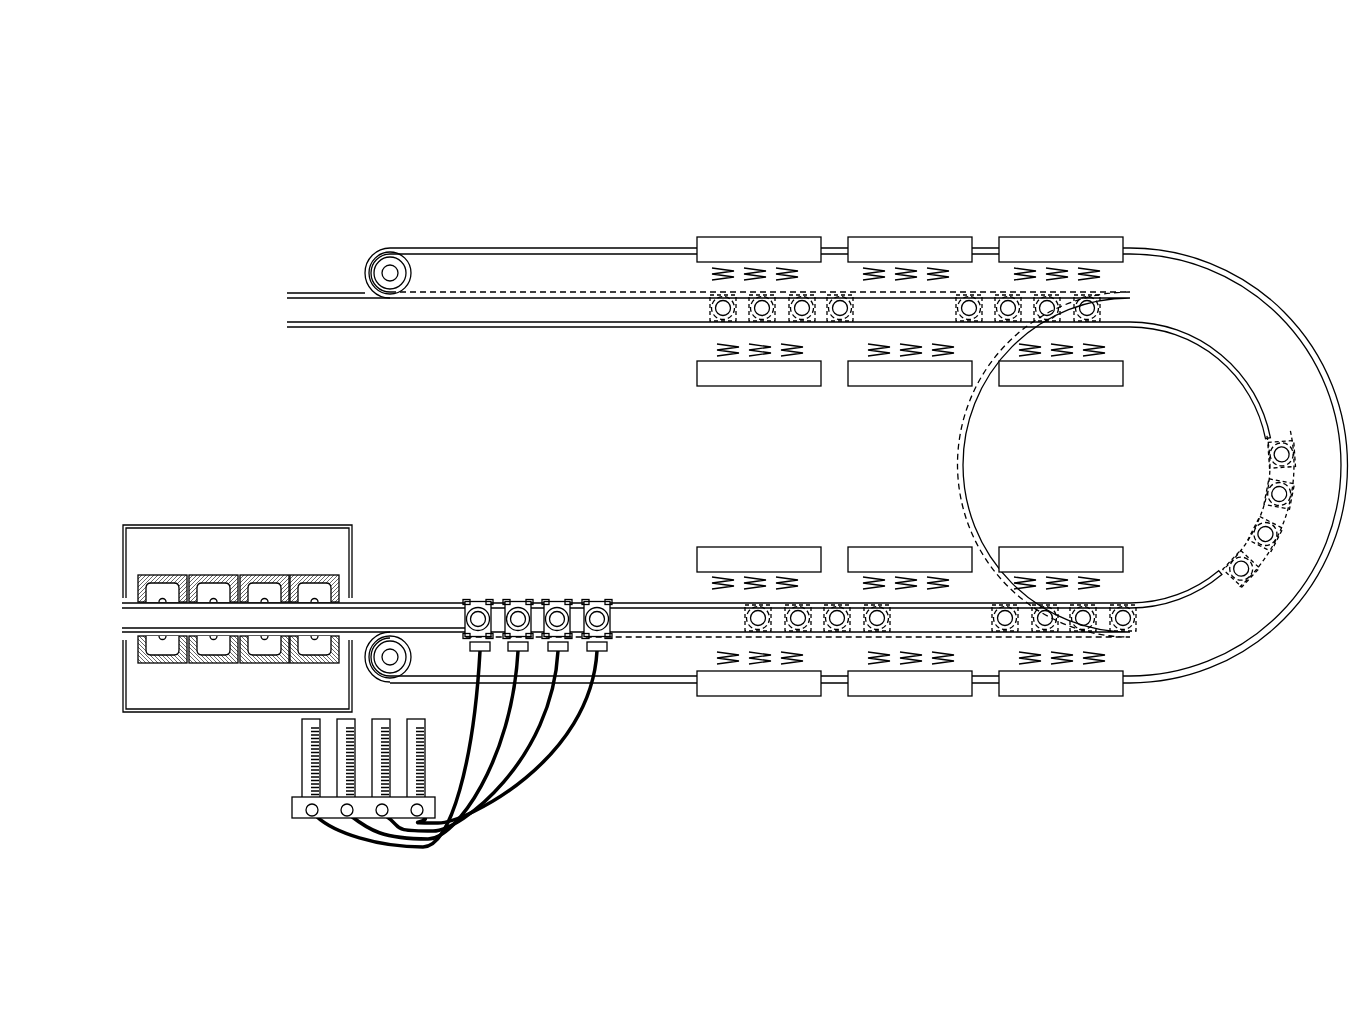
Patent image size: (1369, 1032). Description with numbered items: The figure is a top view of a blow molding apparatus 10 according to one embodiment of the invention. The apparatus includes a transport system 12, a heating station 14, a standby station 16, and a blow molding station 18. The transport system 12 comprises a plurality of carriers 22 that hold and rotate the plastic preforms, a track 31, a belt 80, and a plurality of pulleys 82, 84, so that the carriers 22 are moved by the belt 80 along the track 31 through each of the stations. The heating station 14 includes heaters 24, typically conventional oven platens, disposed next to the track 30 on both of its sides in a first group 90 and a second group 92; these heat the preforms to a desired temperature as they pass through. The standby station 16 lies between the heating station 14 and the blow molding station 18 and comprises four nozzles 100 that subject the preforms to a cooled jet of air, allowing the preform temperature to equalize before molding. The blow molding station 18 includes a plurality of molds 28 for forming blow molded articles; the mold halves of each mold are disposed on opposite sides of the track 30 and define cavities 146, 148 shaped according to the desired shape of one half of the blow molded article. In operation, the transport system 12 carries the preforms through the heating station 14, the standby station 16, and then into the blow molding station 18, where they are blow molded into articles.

The blow molding apparatus 10 is at (525, 198).
The transport system 12 is at (556, 328).
The heating station 14 is at (775, 522).
The standby station 16 is at (537, 556).
The blow molding station 18 is at (248, 495).
The carriers 22 is at (467, 601).
The heaters 24 is at (1091, 690).
The molds 28 is at (155, 575).
The track 30 is at (1242, 391).
The track 31 is at (287, 323).
The belt 80 is at (1243, 651).
The pulley 82 is at (383, 264).
The pulley 84 is at (390, 650).
The first group 90 is at (893, 218).
The second group 92 is at (942, 492).
The nozzles 100 is at (600, 645).
The cavity 146 is at (262, 652).
The cavity 148 is at (266, 595).